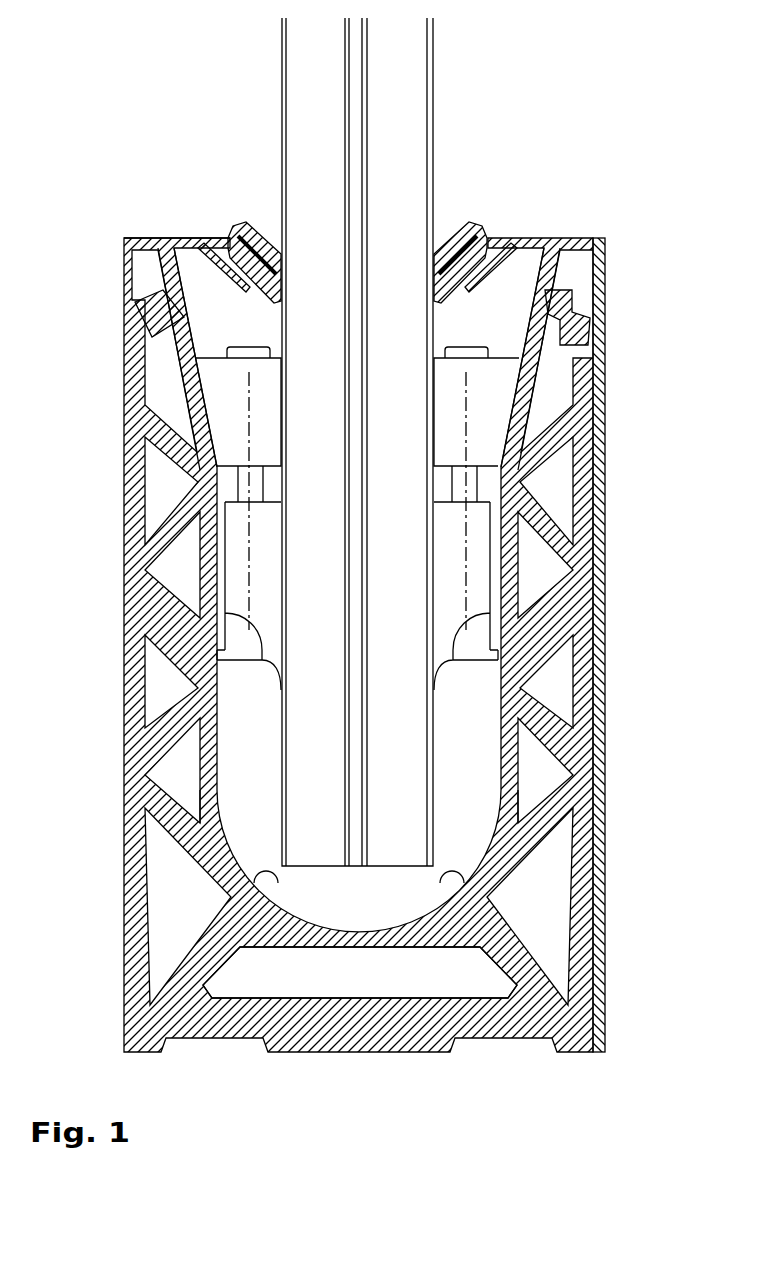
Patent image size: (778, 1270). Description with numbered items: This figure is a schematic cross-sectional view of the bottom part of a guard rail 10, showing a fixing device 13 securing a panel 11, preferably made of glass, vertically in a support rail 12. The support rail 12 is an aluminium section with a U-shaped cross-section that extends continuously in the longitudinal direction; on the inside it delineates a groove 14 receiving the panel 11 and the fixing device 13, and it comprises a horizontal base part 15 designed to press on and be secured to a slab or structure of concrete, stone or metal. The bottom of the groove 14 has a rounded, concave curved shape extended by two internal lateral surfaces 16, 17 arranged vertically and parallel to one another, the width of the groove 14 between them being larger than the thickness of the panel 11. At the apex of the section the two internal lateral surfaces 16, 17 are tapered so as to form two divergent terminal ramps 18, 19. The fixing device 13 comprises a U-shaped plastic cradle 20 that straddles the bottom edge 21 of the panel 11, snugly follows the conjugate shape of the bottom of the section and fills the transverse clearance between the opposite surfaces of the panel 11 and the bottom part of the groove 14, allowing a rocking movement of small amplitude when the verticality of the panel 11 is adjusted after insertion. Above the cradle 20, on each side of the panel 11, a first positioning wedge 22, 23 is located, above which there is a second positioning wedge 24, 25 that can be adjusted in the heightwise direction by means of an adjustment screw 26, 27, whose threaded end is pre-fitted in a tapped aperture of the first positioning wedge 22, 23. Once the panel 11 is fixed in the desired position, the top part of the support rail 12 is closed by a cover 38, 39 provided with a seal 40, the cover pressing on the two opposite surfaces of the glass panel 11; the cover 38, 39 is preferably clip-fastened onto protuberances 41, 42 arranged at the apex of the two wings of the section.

The guard rail 10 is at (128, 158).
The panel 11 is at (400, 84).
The support rail 12 is at (200, 580).
The fixing device 13 is at (246, 671).
The groove 14 is at (213, 768).
The horizontal base part 15 is at (345, 1015).
The internal lateral surface 16 is at (190, 333).
The internal lateral surface 17 is at (540, 345).
The divergent terminal ramp 18 is at (200, 413).
The divergent terminal ramp 19 is at (512, 428).
The cradle 20 is at (468, 775).
The bottom edge 21 is at (403, 872).
The first positioning wedge 22 is at (235, 598).
The first positioning wedge 23 is at (488, 580).
The second positioning wedge 24 is at (222, 382).
The second positioning wedge 25 is at (496, 392).
The adjustment screw 26 is at (240, 483).
The adjustment screw 27 is at (488, 483).
The cover 38 is at (124, 248).
The cover 39 is at (600, 238).
The seal 40 is at (262, 222).
The protuberance 41 is at (146, 298).
The protuberance 42 is at (566, 290).